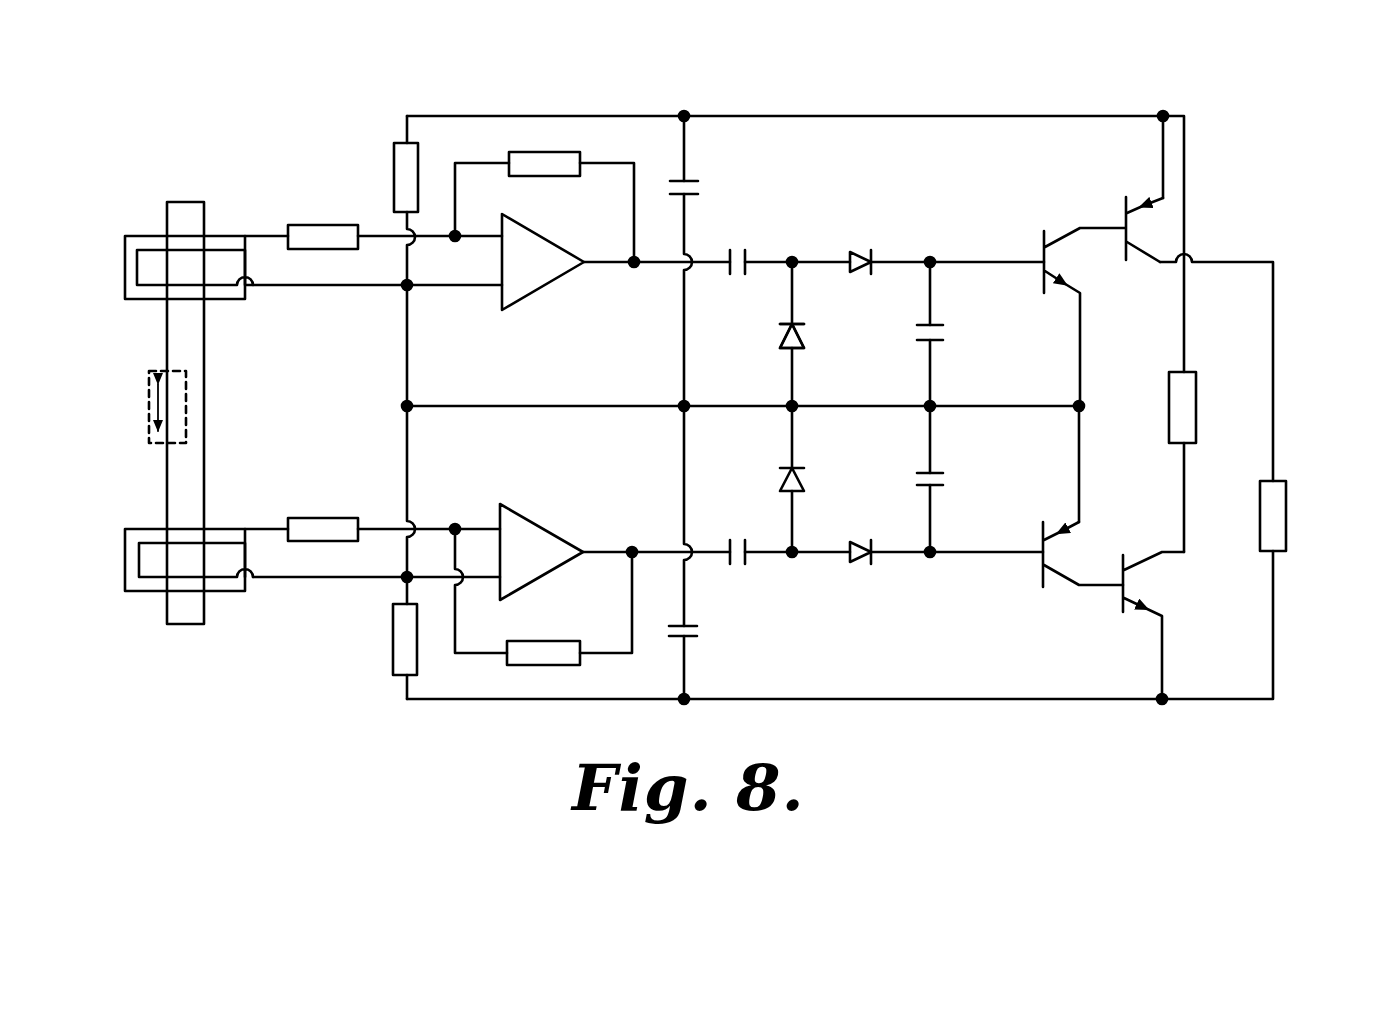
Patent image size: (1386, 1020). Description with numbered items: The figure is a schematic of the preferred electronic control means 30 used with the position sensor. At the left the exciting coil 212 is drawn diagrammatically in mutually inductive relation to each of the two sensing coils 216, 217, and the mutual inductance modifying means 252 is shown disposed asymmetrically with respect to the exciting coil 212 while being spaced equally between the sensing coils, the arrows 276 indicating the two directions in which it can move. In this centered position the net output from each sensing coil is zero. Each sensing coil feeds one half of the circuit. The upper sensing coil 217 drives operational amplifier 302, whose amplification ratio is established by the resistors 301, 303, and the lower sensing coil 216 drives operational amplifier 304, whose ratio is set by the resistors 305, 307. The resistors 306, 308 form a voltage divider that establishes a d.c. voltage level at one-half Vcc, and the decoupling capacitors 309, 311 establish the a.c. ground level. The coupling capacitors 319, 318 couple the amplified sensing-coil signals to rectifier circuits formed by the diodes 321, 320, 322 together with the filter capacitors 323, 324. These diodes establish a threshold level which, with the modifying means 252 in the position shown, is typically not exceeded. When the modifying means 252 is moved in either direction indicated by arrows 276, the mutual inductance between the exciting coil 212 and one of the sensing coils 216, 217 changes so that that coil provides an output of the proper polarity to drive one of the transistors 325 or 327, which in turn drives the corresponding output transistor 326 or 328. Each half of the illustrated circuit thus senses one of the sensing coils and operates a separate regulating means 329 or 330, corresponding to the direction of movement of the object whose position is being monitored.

The electronic control means 30 is at (1014, 54).
The exciting coil 212 is at (185, 204).
The sensing coil 217 is at (137, 262).
The sensing coil 216 is at (125, 574).
The mutual inductance modifying means 252 is at (148, 438).
The arrows 276 is at (150, 398).
The resistor 301 is at (320, 237).
The operational amplifier 302 is at (495, 262).
The resistor 303 is at (555, 162).
The operational amplifier 304 is at (495, 552).
The resistor 305 is at (320, 528).
The resistor 306 is at (415, 165).
The resistor 307 is at (562, 663).
The resistor 308 is at (418, 662).
The decoupling capacitor 309 is at (694, 186).
The decoupling capacitor 311 is at (697, 637).
The coupling capacitor 318 is at (745, 568).
The coupling capacitor 319 is at (748, 258).
The diode 320 is at (802, 346).
The diode 321 is at (858, 252).
The diode 322 is at (855, 565).
The filter capacitor 323 is at (945, 336).
The filter capacitor 324 is at (945, 478).
The transistor 325 is at (1044, 232).
The transistor 326 is at (1126, 197).
The transistor 327 is at (1043, 587).
The transistor 328 is at (1123, 612).
The regulating means 329 is at (1190, 392).
The regulating means 330 is at (1283, 510).